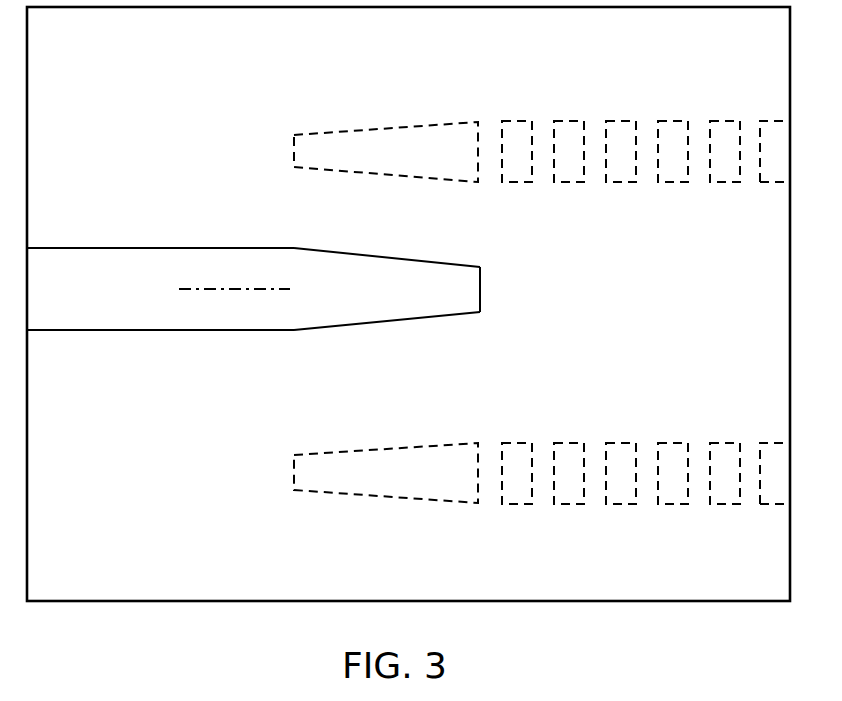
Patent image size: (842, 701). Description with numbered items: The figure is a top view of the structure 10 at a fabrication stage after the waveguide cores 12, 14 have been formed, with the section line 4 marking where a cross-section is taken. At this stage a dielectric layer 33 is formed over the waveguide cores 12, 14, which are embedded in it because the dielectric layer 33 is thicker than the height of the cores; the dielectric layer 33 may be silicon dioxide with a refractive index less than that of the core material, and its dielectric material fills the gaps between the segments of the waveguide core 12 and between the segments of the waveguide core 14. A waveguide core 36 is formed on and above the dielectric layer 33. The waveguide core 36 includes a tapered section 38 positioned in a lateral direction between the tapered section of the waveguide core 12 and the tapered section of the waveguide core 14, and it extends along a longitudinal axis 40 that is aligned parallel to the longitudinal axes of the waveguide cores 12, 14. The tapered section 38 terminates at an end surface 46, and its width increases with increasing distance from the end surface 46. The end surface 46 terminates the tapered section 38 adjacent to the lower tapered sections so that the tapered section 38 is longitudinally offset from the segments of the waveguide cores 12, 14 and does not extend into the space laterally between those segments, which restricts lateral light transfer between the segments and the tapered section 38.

The fluid flow system 10 is at (126, 78).
The section line 4- 4 is at (388, 58).
The waveguide core 12 is at (600, 72).
The waveguide core 14 is at (598, 398).
The dielectric layer 33 is at (92, 555).
The waveguide core 36 is at (135, 372).
The tapered section 38 is at (402, 292).
The longitudinal axis 40 is at (217, 290).
The end surface 46 is at (480, 280).